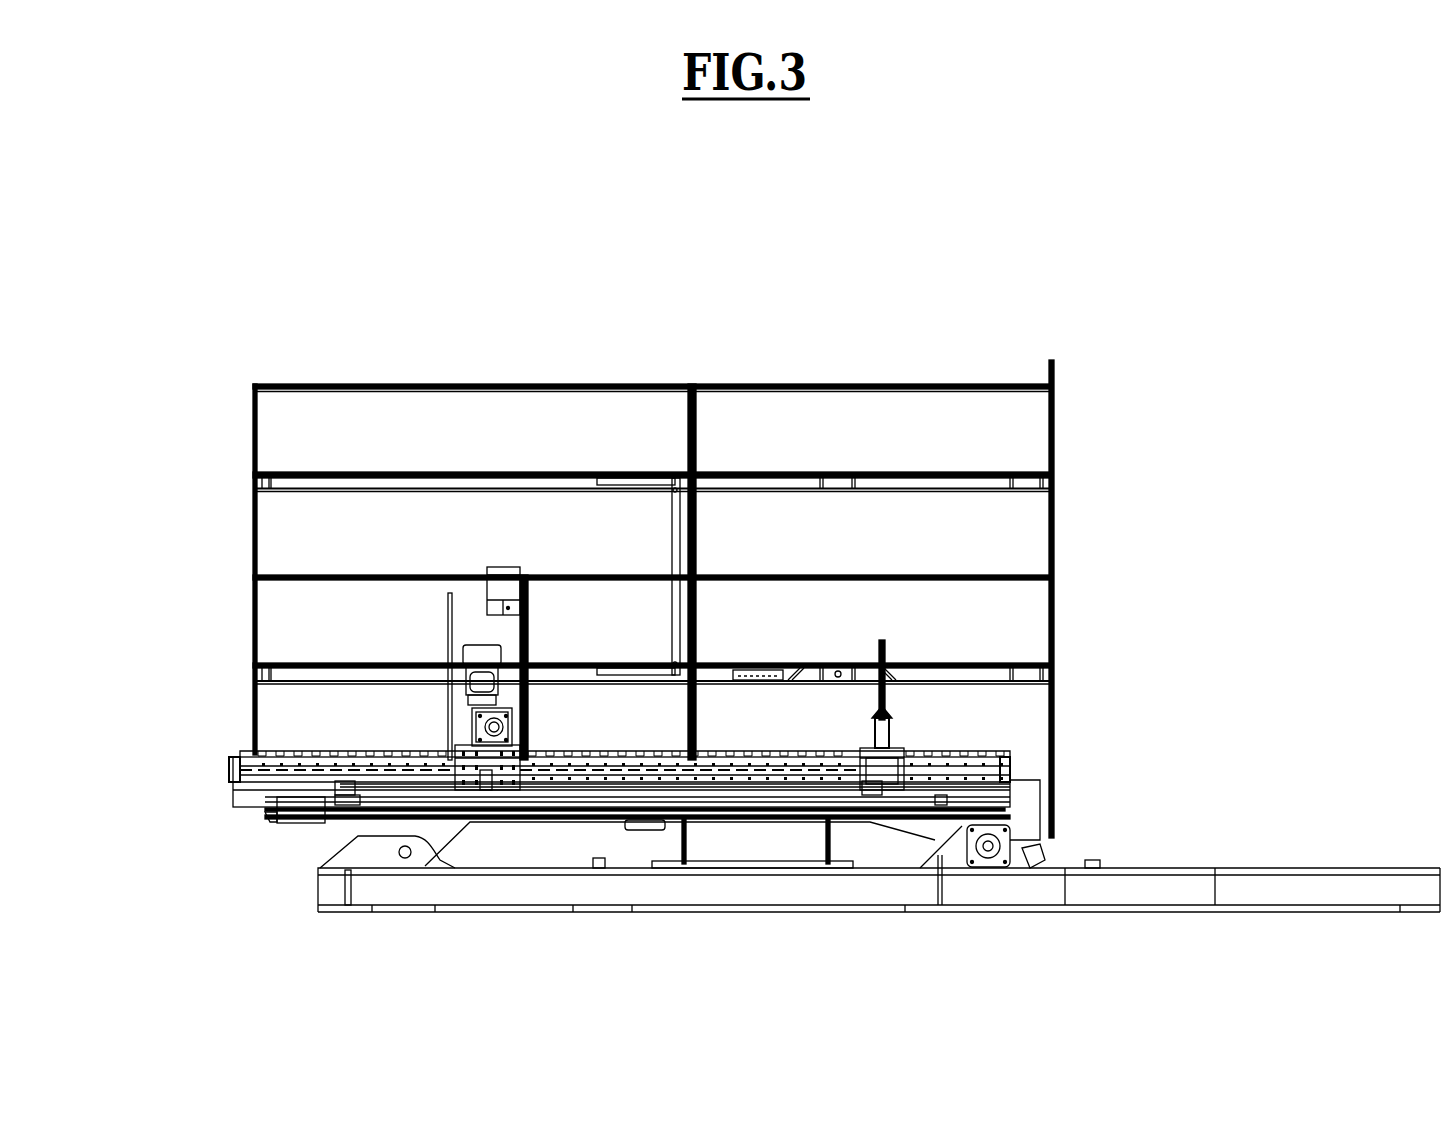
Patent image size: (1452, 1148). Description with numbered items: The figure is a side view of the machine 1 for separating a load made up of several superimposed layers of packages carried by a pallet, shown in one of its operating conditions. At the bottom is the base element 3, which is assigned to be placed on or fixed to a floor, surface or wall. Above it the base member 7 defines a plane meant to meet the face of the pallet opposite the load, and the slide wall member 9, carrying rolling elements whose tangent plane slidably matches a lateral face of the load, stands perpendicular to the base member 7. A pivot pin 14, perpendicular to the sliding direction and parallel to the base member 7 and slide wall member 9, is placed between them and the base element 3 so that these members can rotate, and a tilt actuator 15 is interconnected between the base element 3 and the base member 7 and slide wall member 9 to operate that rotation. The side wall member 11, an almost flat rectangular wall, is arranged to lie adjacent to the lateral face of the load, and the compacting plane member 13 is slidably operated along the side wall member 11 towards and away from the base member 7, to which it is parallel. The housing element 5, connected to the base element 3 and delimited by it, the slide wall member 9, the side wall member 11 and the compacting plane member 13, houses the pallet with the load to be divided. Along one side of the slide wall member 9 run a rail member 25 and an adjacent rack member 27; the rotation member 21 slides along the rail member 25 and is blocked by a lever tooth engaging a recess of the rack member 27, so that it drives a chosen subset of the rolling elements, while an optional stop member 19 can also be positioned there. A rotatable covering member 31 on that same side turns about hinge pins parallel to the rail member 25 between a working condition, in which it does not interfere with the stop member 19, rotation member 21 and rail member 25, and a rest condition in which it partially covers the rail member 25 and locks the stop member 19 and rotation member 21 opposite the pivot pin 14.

The machine 1 is at (1205, 248).
The base element 3 is at (695, 885).
The housing element 5 is at (874, 386).
The base member 7 is at (1047, 388).
The slide wall member 9 is at (552, 752).
The side wall member 11 is at (742, 554).
The compacting plane member 13 is at (692, 385).
The pivot pin 14 is at (1020, 832).
The tilt actuator 15 is at (412, 823).
The stop member 19 is at (882, 720).
The rotation member 21 is at (455, 714).
The rail member 25 is at (780, 765).
The rack member 27 is at (365, 753).
The rotatable covering member 31 is at (600, 820).